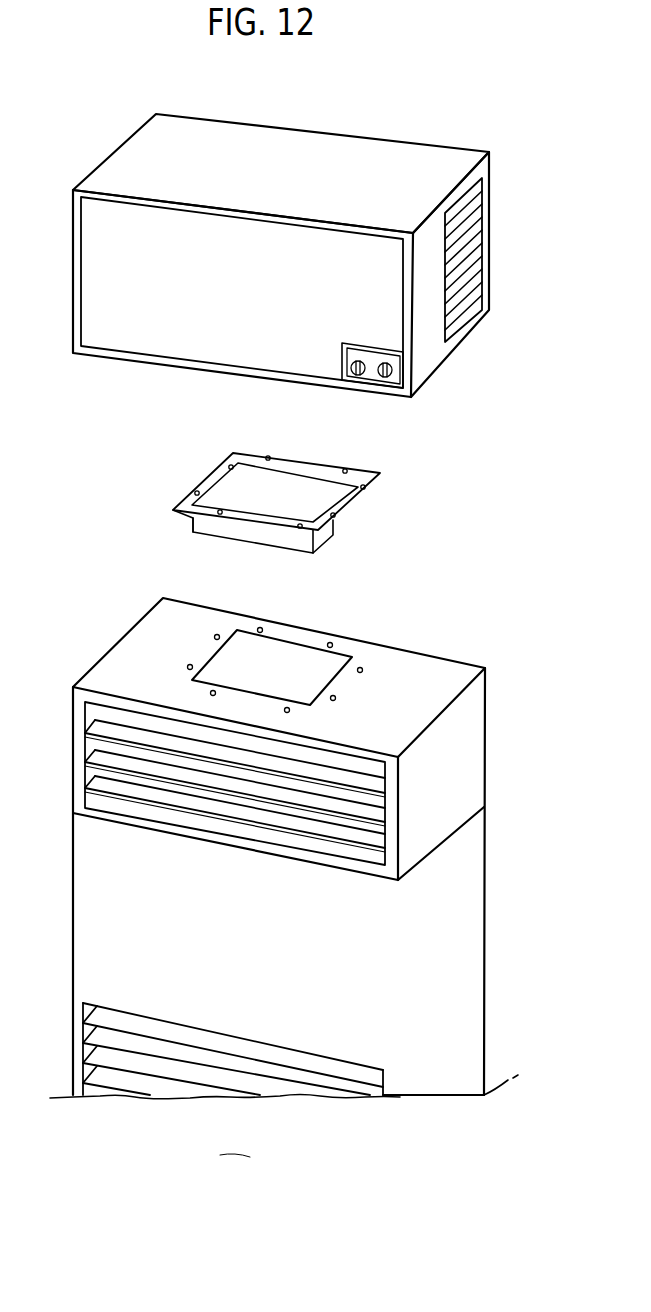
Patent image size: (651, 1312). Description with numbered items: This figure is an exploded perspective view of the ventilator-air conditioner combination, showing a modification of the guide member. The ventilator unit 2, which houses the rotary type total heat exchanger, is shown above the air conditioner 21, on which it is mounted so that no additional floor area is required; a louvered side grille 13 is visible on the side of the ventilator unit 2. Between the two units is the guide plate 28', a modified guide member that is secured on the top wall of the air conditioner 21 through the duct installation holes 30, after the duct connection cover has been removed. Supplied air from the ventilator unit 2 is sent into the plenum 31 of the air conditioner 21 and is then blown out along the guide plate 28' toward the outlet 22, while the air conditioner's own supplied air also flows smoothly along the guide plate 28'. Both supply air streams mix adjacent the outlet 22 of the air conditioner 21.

The ventilator unit 2 is at (398, 160).
The side louver grille 13 is at (467, 256).
The guide plate 28' is at (290, 503).
The duct installation holes 30 is at (363, 669).
The plenum 31 is at (453, 782).
The outlet 22 is at (162, 782).
The air conditioner 21 is at (465, 972).